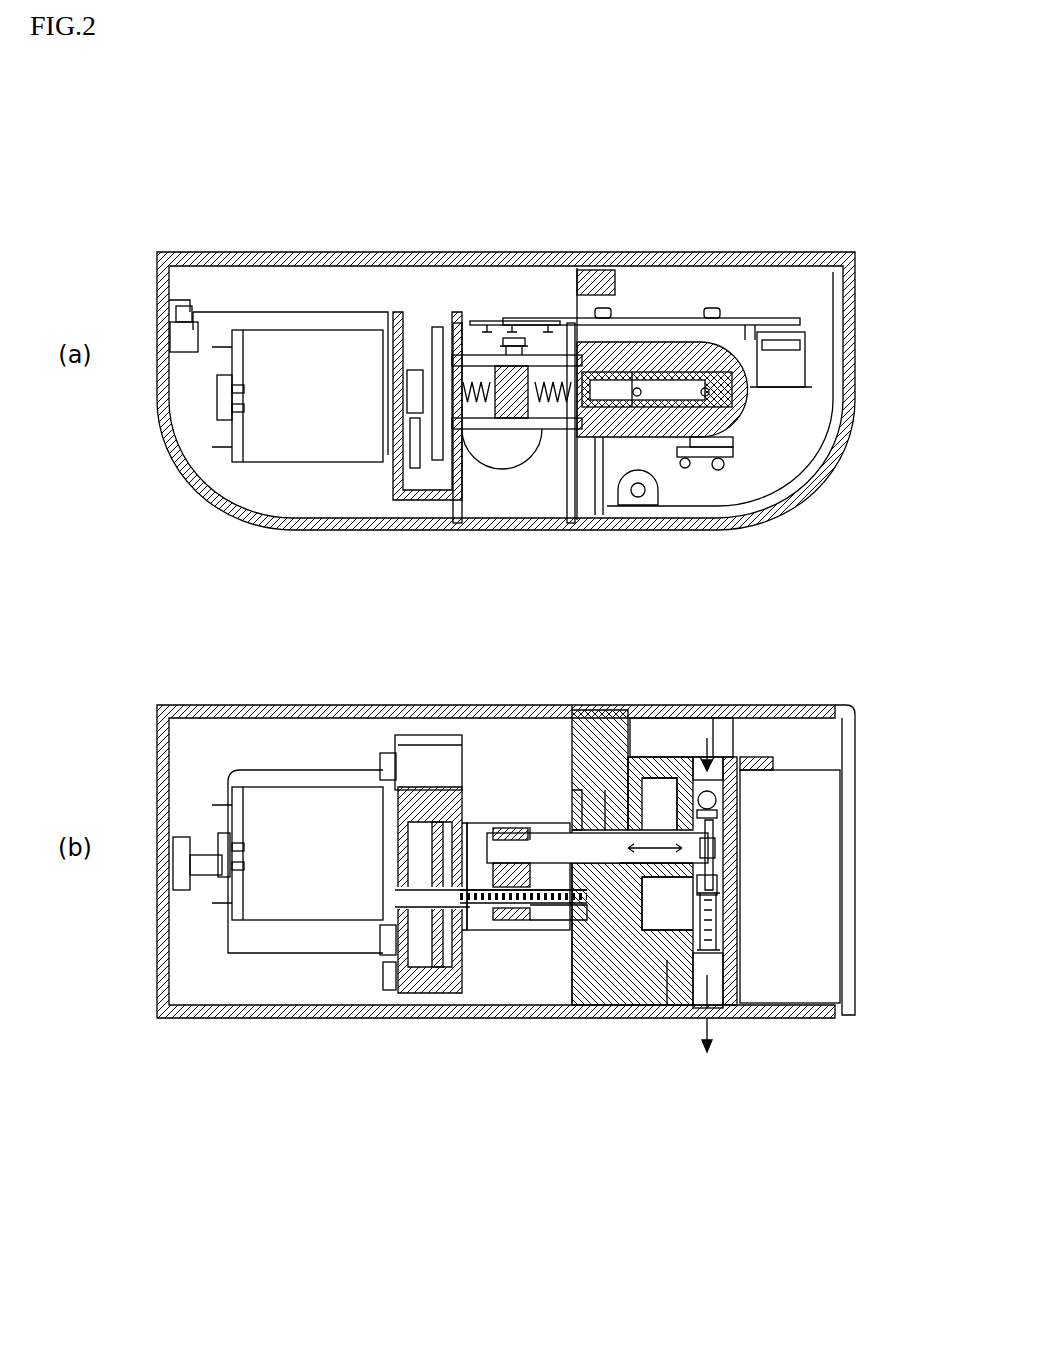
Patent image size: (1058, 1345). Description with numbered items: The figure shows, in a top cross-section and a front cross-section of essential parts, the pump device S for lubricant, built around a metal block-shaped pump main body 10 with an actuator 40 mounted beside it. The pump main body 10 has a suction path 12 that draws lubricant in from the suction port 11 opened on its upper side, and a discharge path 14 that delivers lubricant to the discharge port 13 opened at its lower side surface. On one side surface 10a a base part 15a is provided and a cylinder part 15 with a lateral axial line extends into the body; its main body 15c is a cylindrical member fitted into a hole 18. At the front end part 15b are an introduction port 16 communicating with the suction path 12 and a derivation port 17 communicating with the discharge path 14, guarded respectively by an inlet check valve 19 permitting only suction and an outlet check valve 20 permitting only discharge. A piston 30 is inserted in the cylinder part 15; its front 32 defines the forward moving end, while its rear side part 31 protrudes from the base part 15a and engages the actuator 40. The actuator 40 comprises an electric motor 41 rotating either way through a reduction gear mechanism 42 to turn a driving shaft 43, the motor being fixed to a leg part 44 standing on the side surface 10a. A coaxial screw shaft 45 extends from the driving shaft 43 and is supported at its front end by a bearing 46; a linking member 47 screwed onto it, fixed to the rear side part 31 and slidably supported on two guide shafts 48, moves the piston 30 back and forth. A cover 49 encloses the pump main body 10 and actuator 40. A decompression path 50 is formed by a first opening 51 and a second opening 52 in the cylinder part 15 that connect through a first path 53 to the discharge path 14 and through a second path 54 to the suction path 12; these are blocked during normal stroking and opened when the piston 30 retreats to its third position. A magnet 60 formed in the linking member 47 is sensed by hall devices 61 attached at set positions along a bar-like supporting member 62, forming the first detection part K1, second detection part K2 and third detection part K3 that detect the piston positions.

The pump device for lubricant S is at (218, 175).
The pump main body 10 is at (610, 656).
The one side surface of the pump main body 10a is at (575, 905).
The suction port 11 is at (720, 770).
The suction path 12 is at (718, 348).
The discharge port 13 is at (712, 1015).
The discharge path 14 is at (713, 967).
The cylinder part 15 is at (707, 640).
The base part of the cylinder part 15a is at (530, 827).
The front end part of the cylinder part 15b is at (718, 832).
The main body of the cylinder part 15c is at (632, 372).
The introduction port 16 is at (718, 800).
The derivation port 17 is at (717, 877).
The hole 18 is at (580, 730).
The inlet check valve 19 is at (745, 780).
The outlet check valve 20 is at (713, 925).
The piston 30 is at (520, 905).
The rear side part of the piston 31 is at (462, 735).
The front of the piston 32 is at (703, 1015).
The actuator 40 is at (240, 475).
The electric motor 41 is at (260, 422).
The reduction gear mechanism 42 is at (437, 345).
The driving shaft 43 is at (413, 390).
The leg part 44 is at (500, 905).
The screw shaft 45 is at (556, 410).
The bearing 46 is at (530, 915).
The linking member 47 is at (510, 398).
The guide shafts 48 is at (458, 340).
The cover 49 is at (802, 498).
The decompression path 50 is at (669, 1000).
The first opening 51 is at (625, 930).
The second opening 52 is at (680, 760).
The first path 53 is at (645, 925).
The second path 54 is at (640, 790).
The magnet 60 is at (515, 340).
The hall device 61 is at (516, 207).
The supporting member 62 is at (715, 322).
The first detection part K1 is at (548, 330).
The second detection part K2 is at (512, 330).
The third detection part K3 is at (487, 330).